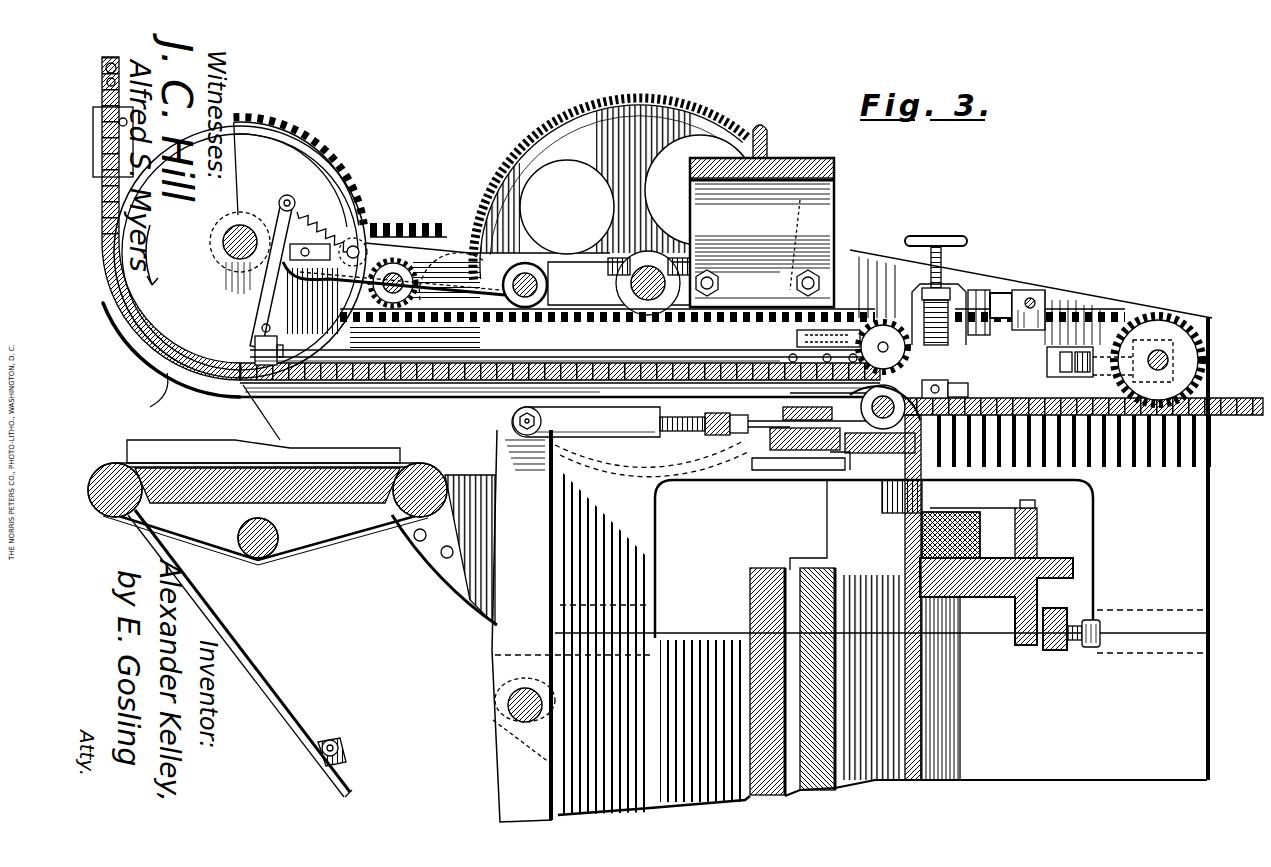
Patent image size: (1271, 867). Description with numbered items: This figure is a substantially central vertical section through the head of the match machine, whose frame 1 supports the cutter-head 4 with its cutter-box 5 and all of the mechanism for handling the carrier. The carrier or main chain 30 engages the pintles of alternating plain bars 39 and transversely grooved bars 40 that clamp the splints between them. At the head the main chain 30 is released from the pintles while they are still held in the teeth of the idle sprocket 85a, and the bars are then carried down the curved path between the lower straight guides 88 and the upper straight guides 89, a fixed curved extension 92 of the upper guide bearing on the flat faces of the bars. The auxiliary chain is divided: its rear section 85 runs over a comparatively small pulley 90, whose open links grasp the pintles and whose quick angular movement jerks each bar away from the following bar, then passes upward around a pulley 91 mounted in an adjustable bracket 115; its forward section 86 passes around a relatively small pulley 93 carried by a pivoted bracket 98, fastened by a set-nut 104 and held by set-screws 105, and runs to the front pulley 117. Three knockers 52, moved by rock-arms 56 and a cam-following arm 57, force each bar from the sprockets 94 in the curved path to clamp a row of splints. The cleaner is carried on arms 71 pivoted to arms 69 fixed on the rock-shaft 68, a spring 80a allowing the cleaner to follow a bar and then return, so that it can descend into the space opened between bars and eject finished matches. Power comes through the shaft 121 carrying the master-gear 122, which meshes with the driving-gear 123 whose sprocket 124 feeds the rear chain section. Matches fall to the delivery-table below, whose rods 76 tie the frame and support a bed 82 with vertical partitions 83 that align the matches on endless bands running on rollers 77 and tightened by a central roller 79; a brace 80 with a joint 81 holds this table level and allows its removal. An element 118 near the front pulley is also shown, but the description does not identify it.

The frame 1 is at (834, 566).
The cutter-head 4 is at (793, 462).
The cutter-box 5 is at (947, 533).
The main chain 30 is at (112, 72).
The bars 39 is at (160, 362).
The bars 40 is at (158, 400).
The knockers 52 is at (753, 428).
The arms 56 is at (523, 626).
The arm 57 is at (500, 763).
The rock-shaft 68 is at (530, 275).
The arms 69 is at (402, 240).
The arms 71 is at (262, 288).
The rods 76 is at (338, 530).
The rollers 77 is at (112, 476).
The band-tightening roller 79 is at (352, 245).
The brace 80 is at (292, 710).
The spring 80a is at (312, 243).
The joint 81 is at (340, 748).
The bed 82 is at (222, 506).
The vertical partitions 83 is at (303, 453).
The rear section of auxiliary chain 85 is at (858, 250).
The idle sprocket 85a is at (299, 225).
The forward section of auxiliary chain 86 is at (1092, 335).
The straight guides 88 is at (613, 390).
The straight guides 89 is at (600, 361).
The pulley 90 is at (250, 348).
The pulley 91 is at (876, 322).
The fixed curved extension 92 is at (930, 410).
The pulley 93 is at (963, 417).
The sprockets 94 is at (855, 402).
The bracket 98 is at (957, 287).
The set-nut 104 is at (1035, 303).
The set-screws 105 is at (1005, 294).
The bracket 115 is at (797, 337).
The front pulley 117 is at (1160, 330).
The bearing housing 118 is at (1073, 372).
The shaft 121 is at (608, 293).
The master-gear 122 is at (557, 123).
The driving-gear 123 is at (425, 252).
The sprocket 124 is at (398, 303).